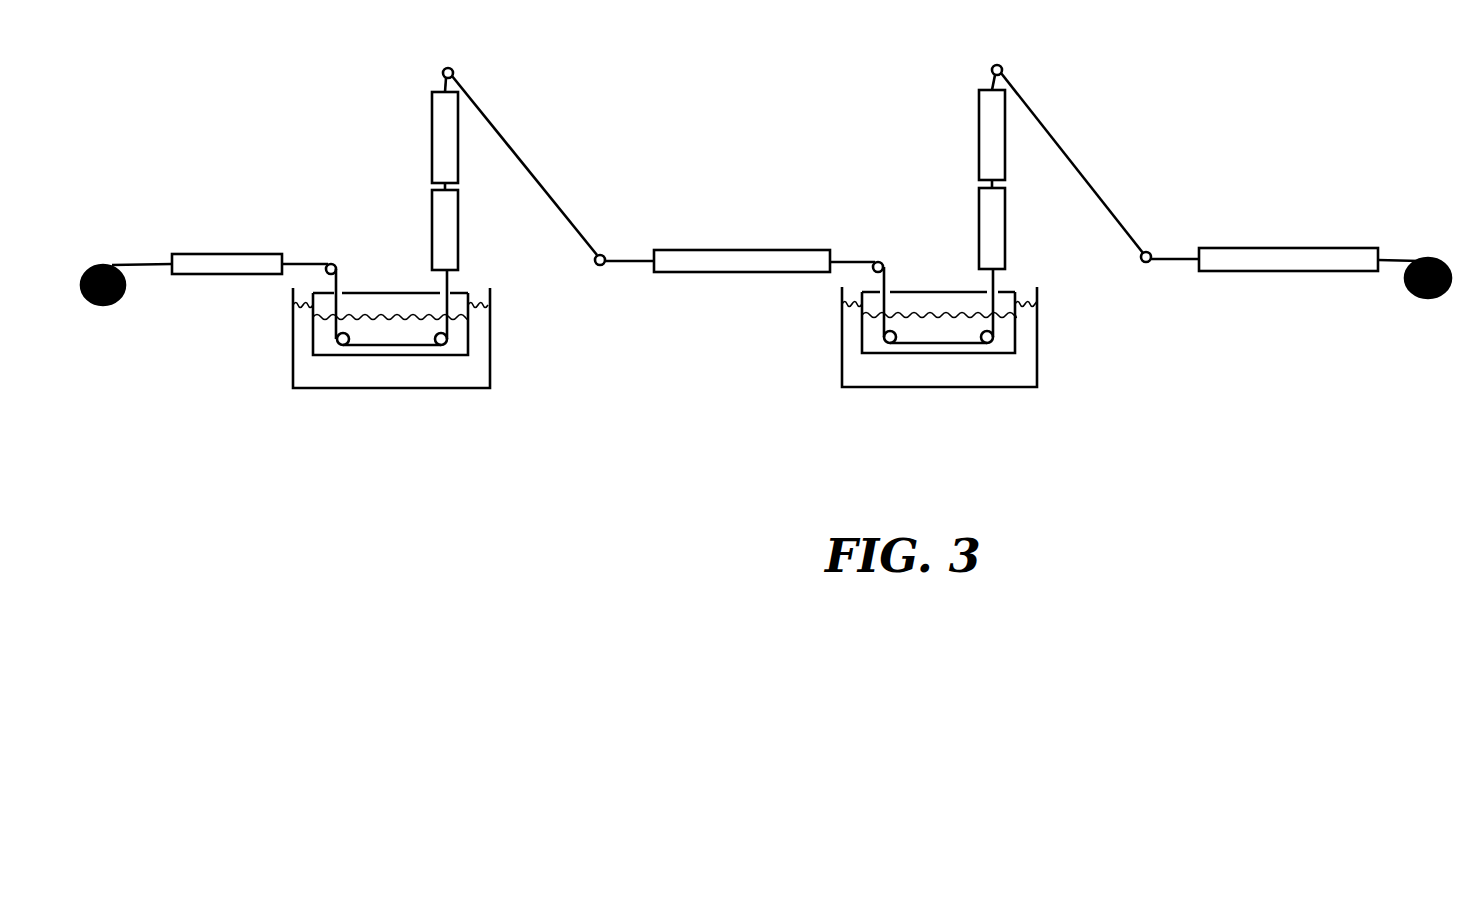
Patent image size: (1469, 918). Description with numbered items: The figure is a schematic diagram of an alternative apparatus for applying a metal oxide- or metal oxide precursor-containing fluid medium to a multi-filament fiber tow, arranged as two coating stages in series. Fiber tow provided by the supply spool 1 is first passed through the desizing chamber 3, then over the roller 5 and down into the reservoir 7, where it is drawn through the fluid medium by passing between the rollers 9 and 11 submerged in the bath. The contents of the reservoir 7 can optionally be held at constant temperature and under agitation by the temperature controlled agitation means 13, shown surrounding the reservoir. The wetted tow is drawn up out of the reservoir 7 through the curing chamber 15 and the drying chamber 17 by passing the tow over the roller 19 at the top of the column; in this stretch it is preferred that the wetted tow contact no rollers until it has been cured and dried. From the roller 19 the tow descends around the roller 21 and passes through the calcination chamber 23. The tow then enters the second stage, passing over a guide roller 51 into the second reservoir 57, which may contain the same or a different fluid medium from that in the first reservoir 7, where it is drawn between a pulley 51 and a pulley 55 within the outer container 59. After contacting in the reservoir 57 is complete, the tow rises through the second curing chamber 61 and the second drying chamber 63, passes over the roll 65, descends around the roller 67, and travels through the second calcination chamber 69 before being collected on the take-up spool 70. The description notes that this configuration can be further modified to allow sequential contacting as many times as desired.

The supply spool 1 is at (93, 266).
The desizing chamber 3 is at (205, 275).
The roller 5 is at (335, 261).
The reservoir 7 is at (402, 290).
The roller 9 is at (335, 343).
The roller 11 is at (447, 336).
The temperature controlled agitation means 13 is at (490, 373).
The curing chamber 15 is at (456, 243).
The drying chamber 17 is at (456, 167).
The roller 19 is at (452, 66).
The roller 21 is at (598, 266).
The calcination chamber 23 is at (718, 272).
The guide pulley 51 is at (882, 260).
The submerged pulley 55 is at (993, 334).
The second reservoir 57 is at (945, 292).
The outer bath container 59 is at (1037, 372).
The second curing chamber 61 is at (1003, 243).
The second drying chamber 63 is at (1031, 159).
The roll 65 is at (1002, 64).
The roller 67 is at (1145, 263).
The calcination chamber 69 is at (1262, 272).
The take up spool 70 is at (1441, 264).